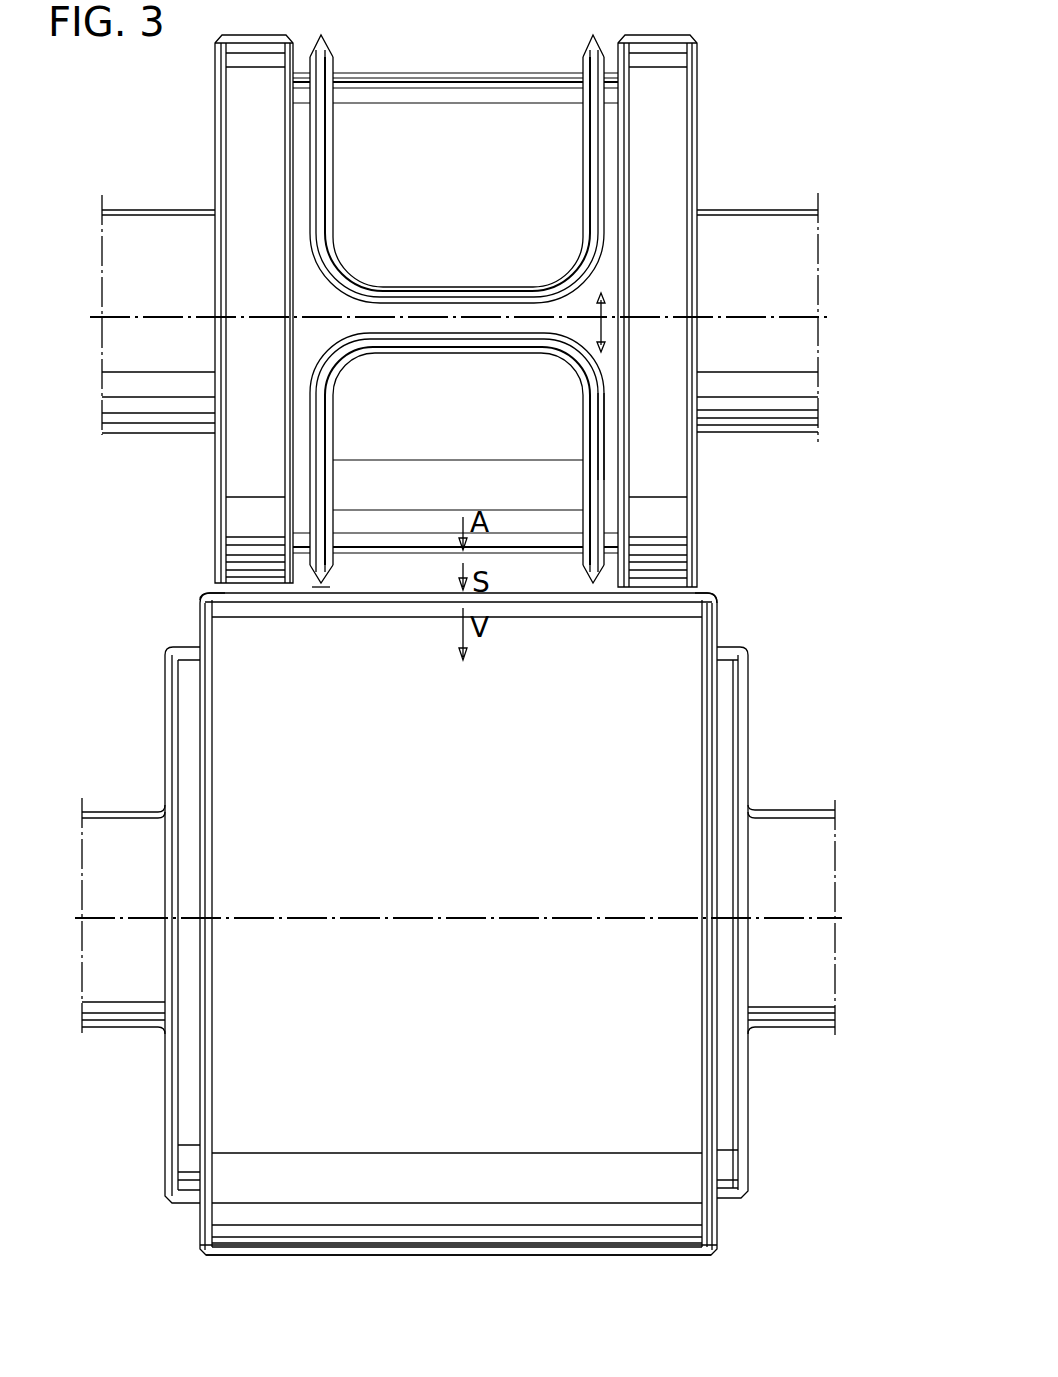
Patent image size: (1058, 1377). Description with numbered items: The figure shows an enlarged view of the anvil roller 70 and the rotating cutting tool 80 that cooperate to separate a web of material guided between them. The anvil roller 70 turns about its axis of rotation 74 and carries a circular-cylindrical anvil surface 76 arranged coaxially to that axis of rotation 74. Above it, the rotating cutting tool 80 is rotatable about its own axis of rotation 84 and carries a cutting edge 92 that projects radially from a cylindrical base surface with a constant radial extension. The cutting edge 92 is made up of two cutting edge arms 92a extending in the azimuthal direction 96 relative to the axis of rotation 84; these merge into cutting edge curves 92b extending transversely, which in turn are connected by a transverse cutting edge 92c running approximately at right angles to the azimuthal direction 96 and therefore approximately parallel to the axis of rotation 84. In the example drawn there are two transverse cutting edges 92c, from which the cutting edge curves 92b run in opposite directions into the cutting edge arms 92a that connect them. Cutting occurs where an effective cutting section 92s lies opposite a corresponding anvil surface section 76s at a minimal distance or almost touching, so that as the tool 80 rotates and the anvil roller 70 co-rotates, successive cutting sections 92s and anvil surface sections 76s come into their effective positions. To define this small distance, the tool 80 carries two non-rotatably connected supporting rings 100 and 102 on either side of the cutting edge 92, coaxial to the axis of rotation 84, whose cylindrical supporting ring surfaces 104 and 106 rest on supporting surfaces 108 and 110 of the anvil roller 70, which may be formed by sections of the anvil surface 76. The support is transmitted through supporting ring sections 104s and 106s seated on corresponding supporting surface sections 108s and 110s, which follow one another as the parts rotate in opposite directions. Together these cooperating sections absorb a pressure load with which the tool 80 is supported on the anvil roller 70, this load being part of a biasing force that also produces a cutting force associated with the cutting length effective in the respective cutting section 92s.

The anvil roller 70 is at (185, 1228).
The axis of rotation of the anvil roller 74 is at (835, 918).
The anvil surface 76 is at (665, 1145).
The anvil surface section 76s is at (338, 586).
The rotating cutting tool 80 is at (543, 65).
The axis of rotation of the cutting tool 84 is at (818, 317).
The cutting edge 92 is at (333, 407).
The cutting edge arm 92a is at (338, 522).
The cutting edge curve 92b is at (575, 387).
The transverse cutting edge 92c is at (450, 350).
The cutting section 92s is at (338, 590).
The azimuthal direction 96 is at (610, 320).
The supporting ring 100 is at (232, 120).
The supporting ring 102 is at (680, 135).
The supporting ring surface 104 is at (245, 462).
The supporting ring section 104s is at (270, 582).
The supporting ring surface 106 is at (673, 503).
The supporting ring section 106s is at (620, 585).
The supporting surface 108 is at (222, 650).
The supporting surface section 108s is at (243, 602).
The supporting surface 110 is at (685, 690).
The supporting surface section 110s is at (680, 610).